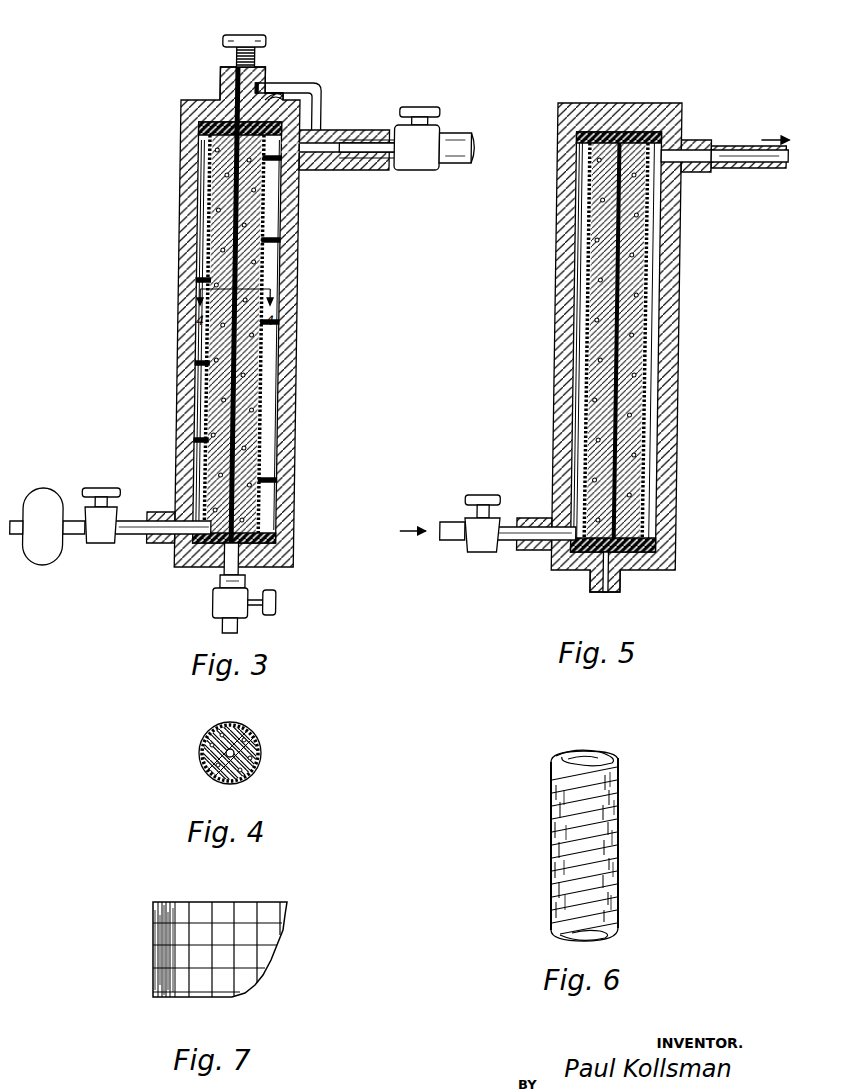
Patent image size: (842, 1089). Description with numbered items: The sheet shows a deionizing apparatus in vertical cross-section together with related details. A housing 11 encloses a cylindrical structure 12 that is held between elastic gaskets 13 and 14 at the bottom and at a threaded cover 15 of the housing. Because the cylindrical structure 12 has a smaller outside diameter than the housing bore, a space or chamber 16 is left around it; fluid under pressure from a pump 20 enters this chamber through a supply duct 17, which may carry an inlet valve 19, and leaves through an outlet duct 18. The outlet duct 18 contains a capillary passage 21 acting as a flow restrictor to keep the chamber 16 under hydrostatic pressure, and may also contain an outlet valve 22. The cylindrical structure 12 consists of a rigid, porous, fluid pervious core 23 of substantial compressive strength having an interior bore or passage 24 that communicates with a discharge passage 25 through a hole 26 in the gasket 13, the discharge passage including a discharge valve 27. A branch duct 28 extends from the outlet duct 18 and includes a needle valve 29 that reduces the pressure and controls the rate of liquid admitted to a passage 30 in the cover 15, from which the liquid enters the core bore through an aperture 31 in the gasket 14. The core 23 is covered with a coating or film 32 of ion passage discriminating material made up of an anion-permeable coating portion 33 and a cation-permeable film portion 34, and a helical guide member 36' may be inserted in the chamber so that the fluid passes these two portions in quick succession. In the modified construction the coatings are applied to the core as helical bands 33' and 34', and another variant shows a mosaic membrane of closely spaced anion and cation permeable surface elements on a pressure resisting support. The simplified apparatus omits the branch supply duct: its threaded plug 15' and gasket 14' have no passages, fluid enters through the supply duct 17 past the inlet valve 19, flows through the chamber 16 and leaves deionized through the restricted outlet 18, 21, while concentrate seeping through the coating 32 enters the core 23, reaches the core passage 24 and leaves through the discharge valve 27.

In FIG. 3, the housing 11 is at (303, 470).
In FIG. 3, the cylindrical structure 12 is at (288, 433).
In FIG. 3, the elastic gasket 13 is at (205, 555).
In FIG. 3, the elastic gasket 14 is at (213, 122).
In FIG. 5, the gasket 14' is at (591, 155).
In FIG. 3, the threaded cover 15 is at (233, 83).
In FIG. 5, the threaded plug 15' is at (616, 336).
In FIG. 3, the space or chamber 16 is at (206, 331).
In FIG. 5, the space or chamber 16 is at (659, 387).
In FIG. 3, the supply duct 17 is at (149, 541).
In FIG. 5, the supply duct 17 is at (518, 549).
In FIG. 3, the outlet duct 18 is at (310, 150).
In FIG. 5, the outlet duct 18 is at (692, 142).
In FIG. 3, the inlet valve 19 is at (121, 520).
In FIG. 5, the inlet valve 19 is at (494, 528).
In FIG. 3, the pump 20 is at (48, 496).
In FIG. 3, the capillary passage 21 is at (354, 146).
In FIG. 5, the capillary passage 21 is at (757, 168).
In FIG. 3, the outlet valve 22 is at (438, 140).
In FIG. 3, the core 23 is at (271, 334).
In FIG. 5, the core 23 is at (581, 340).
In FIG. 4, the core 23 is at (221, 744).
In FIG. 6, the core 23 is at (584, 831).
In FIG. 3, the interior bore or passage 24 is at (268, 371).
In FIG. 5, the interior bore or passage 24 is at (622, 464).
In FIG. 4, the interior bore or passage 24 is at (250, 770).
In FIG. 3, the discharge passage 25 is at (230, 579).
In FIG. 3, the hole 26 is at (252, 560).
In FIG. 3, the discharge valve 27 is at (250, 606).
In FIG. 5, the discharge valve 27 is at (616, 593).
In FIG. 3, the branch duct 28 is at (316, 90).
In FIG. 3, the needle valve 29 is at (252, 44).
In FIG. 3, the passage 30 is at (276, 98).
In FIG. 3, the aperture 31 is at (238, 140).
In FIG. 5, the coating or film 32 is at (651, 282).
In FIG. 4, the coating or film 32 is at (200, 768).
In FIG. 4, the coating portion 33 is at (223, 771).
In FIG. 6, the helical band 33' is at (637, 846).
In FIG. 4, the film portion 34 is at (246, 740).
In FIG. 6, the helical band 34' is at (531, 850).
In FIG. 3, the helical guide member 36' is at (172, 360).